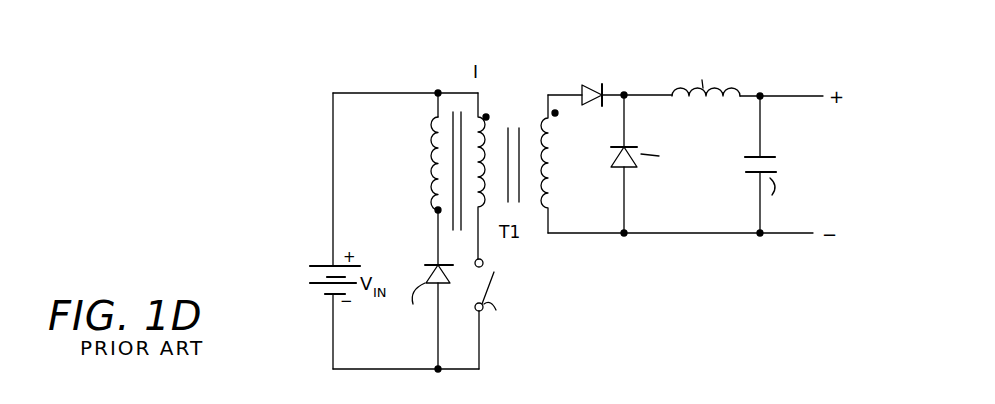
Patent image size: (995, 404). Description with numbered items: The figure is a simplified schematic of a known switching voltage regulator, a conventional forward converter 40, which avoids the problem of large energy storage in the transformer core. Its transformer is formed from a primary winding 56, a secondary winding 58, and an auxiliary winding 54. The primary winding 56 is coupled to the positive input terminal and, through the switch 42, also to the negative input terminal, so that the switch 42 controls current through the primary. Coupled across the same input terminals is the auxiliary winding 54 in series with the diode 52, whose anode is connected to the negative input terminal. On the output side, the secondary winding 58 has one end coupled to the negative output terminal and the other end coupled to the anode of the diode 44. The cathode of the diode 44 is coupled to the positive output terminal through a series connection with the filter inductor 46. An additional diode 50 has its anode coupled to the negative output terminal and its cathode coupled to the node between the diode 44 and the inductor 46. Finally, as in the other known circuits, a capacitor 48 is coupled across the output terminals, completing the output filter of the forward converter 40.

The forward converter 40 is at (652, 275).
The switch 42 is at (494, 314).
The diode 44 is at (607, 85).
The filter inductor 46 is at (728, 91).
The capacitor 48 is at (773, 169).
The additional diode 50 is at (641, 167).
The diode 52 is at (449, 283).
The auxiliary winding 54 is at (432, 184).
The primary winding 56 is at (489, 118).
The secondary winding 58 is at (556, 166).